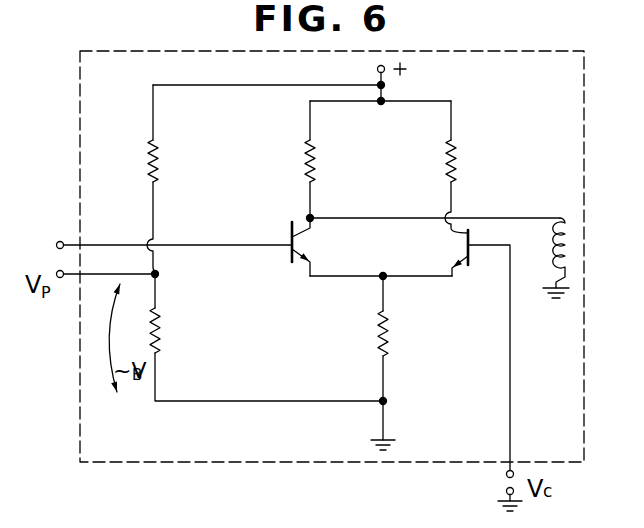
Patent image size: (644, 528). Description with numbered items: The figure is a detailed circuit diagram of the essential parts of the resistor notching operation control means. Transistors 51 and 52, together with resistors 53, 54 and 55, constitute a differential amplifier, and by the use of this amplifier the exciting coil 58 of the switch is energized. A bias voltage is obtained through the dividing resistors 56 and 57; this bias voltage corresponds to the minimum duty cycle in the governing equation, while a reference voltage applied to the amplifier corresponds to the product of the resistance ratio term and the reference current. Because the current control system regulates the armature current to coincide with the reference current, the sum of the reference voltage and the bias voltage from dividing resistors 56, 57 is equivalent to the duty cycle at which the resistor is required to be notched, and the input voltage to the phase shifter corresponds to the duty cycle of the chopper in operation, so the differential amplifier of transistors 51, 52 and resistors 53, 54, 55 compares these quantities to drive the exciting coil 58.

The transistor 51 is at (290, 257).
The transistor 52 is at (470, 248).
The resistor 53 is at (316, 173).
The resistor 54 is at (457, 175).
The resistor 55 is at (389, 343).
The dividing resistor 56 is at (160, 173).
The dividing resistor 57 is at (161, 345).
The exciting coil 58 is at (547, 257).